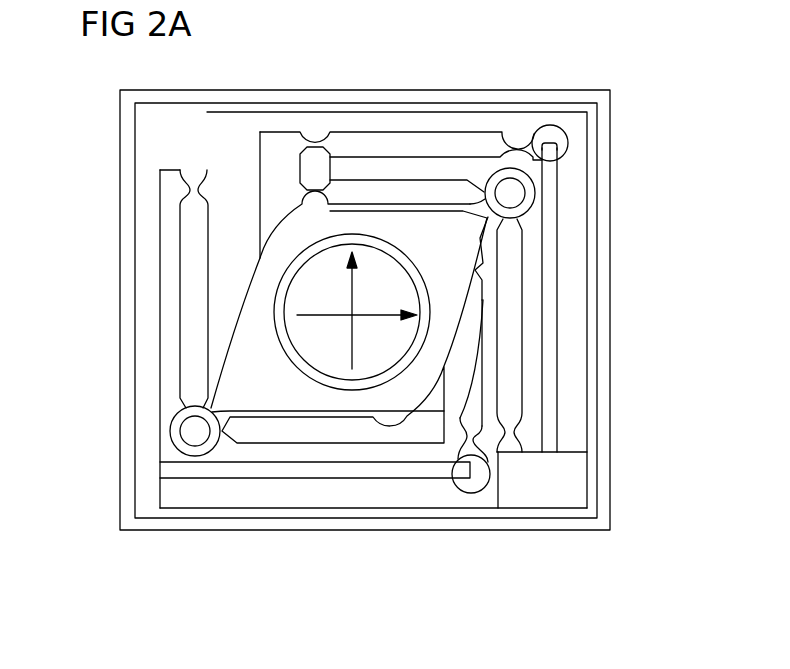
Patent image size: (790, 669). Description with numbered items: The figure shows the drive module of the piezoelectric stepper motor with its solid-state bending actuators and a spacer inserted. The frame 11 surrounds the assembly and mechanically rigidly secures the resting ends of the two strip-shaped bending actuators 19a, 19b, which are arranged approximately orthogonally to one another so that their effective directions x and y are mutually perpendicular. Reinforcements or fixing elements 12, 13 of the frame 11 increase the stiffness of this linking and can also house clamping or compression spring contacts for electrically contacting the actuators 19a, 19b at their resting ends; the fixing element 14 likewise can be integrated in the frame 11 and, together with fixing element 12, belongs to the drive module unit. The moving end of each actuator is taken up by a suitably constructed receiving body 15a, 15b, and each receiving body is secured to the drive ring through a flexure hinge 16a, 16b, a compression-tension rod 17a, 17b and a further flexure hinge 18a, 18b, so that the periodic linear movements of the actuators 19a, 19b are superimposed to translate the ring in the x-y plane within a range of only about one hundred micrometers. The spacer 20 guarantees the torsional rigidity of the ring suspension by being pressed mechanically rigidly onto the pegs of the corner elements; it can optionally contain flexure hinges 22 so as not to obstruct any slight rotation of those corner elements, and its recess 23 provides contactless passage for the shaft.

The frame 11 is at (606, 188).
The fixing element 12 is at (575, 484).
The fixing element 13 is at (147, 492).
The fixing element 14 is at (162, 142).
The receiving body 15a is at (552, 130).
The receiving body 15b is at (481, 490).
The flexure hinge 16a is at (517, 140).
The flexure hinge 16b is at (500, 467).
The compression-tension rod 17a is at (410, 152).
The compression-tension rod 17b is at (474, 331).
The flexure hinge 18a is at (317, 140).
The flexure hinge 18b is at (473, 282).
The bending actuator 19a is at (550, 250).
The bending actuator 19b is at (302, 470).
The spacer 20 is at (259, 300).
The flexure hinge 22 is at (208, 409).
The recess 23 is at (277, 318).